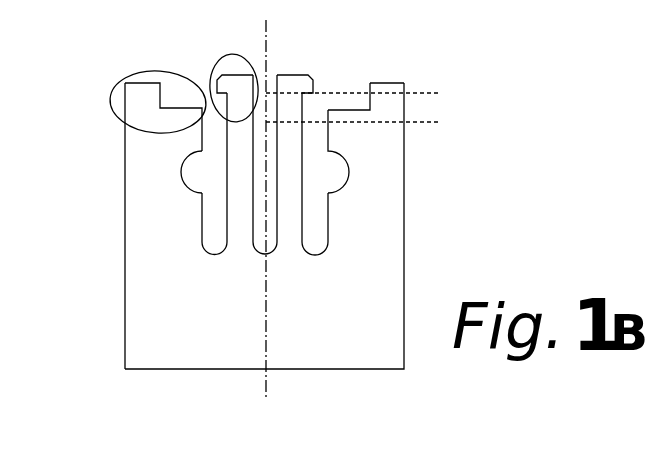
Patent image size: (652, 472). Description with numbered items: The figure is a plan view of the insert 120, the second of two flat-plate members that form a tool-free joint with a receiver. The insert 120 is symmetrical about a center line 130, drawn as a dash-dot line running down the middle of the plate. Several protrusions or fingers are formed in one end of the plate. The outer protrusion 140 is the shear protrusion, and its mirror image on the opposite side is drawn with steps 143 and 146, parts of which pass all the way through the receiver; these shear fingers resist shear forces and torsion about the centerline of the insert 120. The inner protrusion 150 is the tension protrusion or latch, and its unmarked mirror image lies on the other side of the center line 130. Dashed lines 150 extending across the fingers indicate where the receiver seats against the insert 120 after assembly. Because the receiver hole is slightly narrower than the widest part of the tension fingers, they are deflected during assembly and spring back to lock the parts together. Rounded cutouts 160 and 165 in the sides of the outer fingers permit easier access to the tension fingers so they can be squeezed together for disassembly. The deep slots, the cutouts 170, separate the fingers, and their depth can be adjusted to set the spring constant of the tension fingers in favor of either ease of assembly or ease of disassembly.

The insert 120 is at (178, 358).
The center line 130 is at (263, 401).
The outer protrusion 140 is at (122, 78).
The step 143 is at (347, 107).
The step 146 is at (412, 77).
The inner protrusion 150 is at (225, 55).
The cutout 160 is at (182, 192).
The cutout 165 is at (353, 181).
The cutouts 170 is at (226, 266).